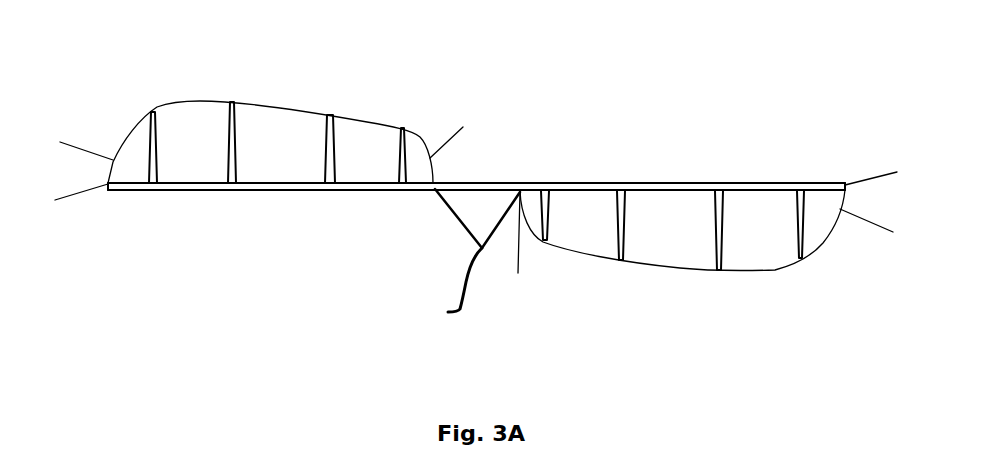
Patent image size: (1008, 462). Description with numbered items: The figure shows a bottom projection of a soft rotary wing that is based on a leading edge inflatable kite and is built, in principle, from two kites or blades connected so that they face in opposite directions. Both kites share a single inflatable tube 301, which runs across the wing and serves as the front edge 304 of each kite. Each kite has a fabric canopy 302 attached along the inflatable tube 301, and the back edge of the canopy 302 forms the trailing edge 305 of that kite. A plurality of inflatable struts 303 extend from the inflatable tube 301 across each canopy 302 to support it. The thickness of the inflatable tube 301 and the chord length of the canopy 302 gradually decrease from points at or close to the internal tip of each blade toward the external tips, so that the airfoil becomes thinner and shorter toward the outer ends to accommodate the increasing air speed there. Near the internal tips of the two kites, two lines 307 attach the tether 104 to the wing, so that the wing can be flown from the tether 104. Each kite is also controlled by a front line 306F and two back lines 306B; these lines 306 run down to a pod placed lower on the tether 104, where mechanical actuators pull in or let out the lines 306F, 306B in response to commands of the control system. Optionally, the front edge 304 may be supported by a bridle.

The tether 104 is at (462, 287).
The inflatable tube 301 is at (295, 183).
The fabric canopy 302 is at (178, 123).
The inflatable struts 303 is at (328, 113).
The front edge 304 is at (177, 192).
The trailing edge 305 is at (260, 103).
The lines 306 is at (518, 273).
The back lines 306B is at (92, 148).
The front line 306F is at (82, 195).
The lines 307 is at (465, 229).